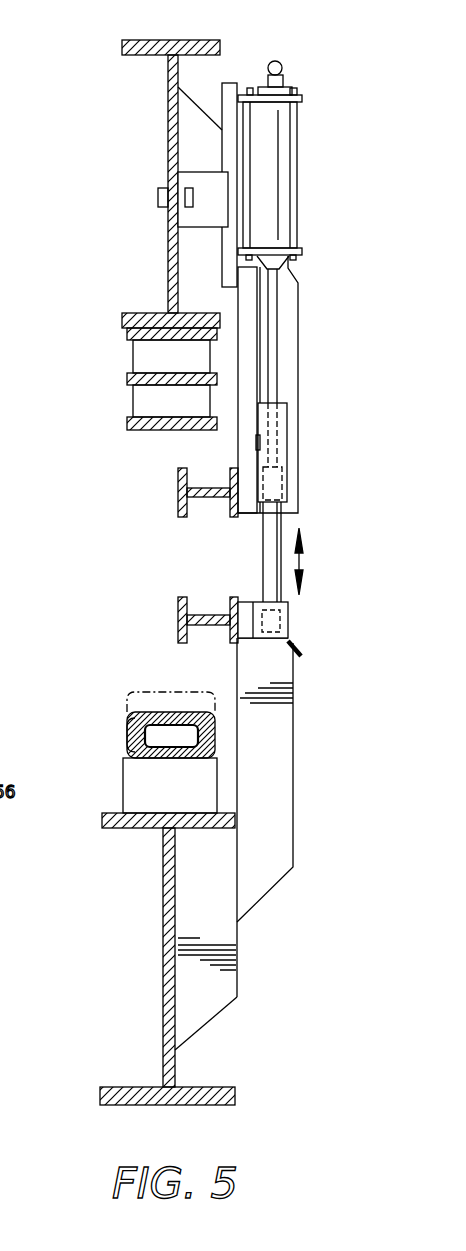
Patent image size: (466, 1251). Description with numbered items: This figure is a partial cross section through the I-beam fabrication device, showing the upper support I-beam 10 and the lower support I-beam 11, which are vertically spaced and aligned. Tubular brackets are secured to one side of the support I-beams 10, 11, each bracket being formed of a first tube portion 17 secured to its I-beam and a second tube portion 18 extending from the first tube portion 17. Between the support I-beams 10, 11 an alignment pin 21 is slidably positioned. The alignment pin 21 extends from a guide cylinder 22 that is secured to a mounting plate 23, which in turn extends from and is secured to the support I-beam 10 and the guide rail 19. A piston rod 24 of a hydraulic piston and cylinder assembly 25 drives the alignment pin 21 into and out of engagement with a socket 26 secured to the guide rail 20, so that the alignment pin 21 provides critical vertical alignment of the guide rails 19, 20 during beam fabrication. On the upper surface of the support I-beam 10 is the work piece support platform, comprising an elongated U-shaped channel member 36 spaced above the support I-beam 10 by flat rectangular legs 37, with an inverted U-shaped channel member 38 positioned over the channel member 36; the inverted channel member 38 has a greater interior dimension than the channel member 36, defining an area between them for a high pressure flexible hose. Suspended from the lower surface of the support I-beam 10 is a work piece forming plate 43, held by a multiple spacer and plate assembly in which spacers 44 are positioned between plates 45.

The support I-beam 10 is at (168, 85).
The support I-beam 11 is at (163, 883).
The first tube portion 17 is at (193, 128).
The second tube portion 18 is at (285, 322).
The guide rail 19 is at (178, 490).
The guide rail 20 is at (178, 618).
The alignment pin 21 is at (267, 565).
The guide cylinder 22 is at (282, 450).
The mounting plate 23 is at (232, 84).
The piston rod 24 is at (275, 377).
The hydraulic piston and cylinder assembly 25 is at (270, 210).
The socket 26 is at (288, 627).
The elongated U-shaped channel member 36 is at (130, 755).
The flat rectangular leg 37 is at (130, 795).
The inverted U-shaped channel member 38 is at (130, 693).
The work piece forming plate 43 is at (128, 456).
The spacer 44 is at (0, 365).
The plate 45 is at (125, 378).